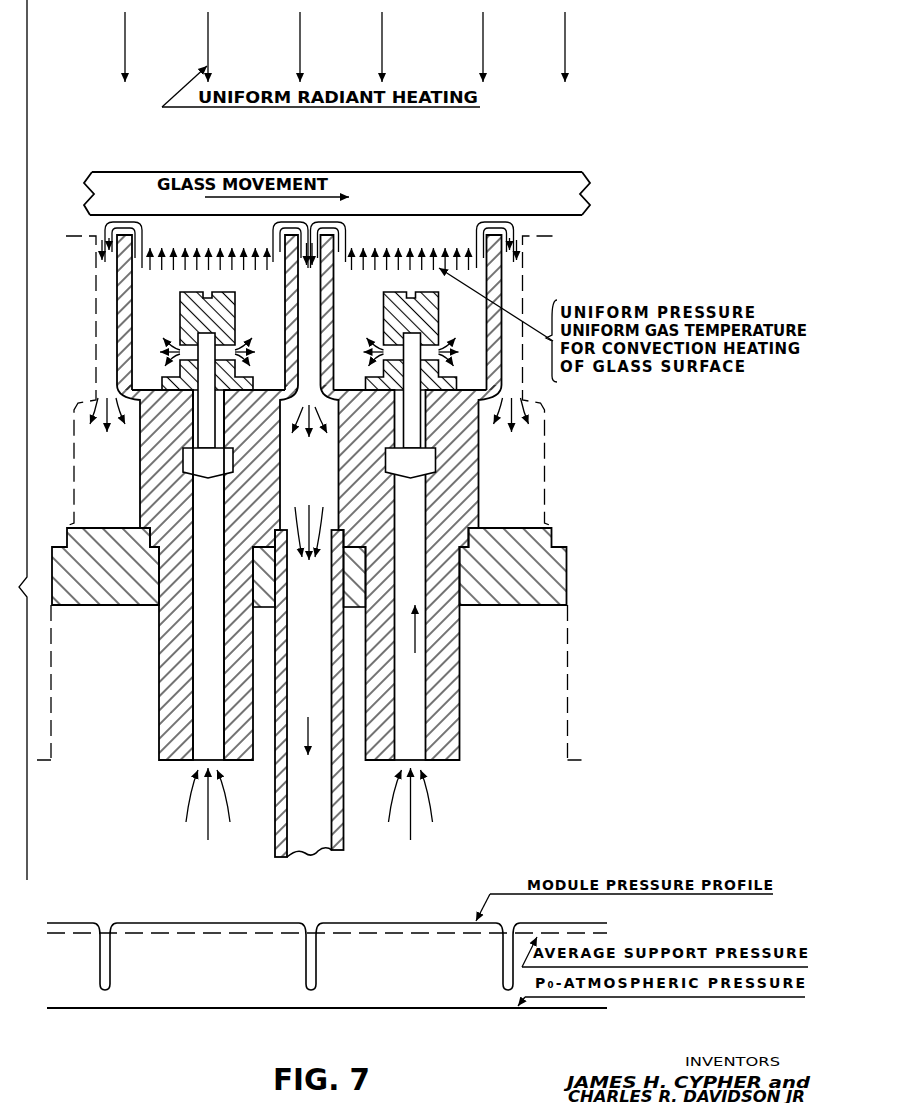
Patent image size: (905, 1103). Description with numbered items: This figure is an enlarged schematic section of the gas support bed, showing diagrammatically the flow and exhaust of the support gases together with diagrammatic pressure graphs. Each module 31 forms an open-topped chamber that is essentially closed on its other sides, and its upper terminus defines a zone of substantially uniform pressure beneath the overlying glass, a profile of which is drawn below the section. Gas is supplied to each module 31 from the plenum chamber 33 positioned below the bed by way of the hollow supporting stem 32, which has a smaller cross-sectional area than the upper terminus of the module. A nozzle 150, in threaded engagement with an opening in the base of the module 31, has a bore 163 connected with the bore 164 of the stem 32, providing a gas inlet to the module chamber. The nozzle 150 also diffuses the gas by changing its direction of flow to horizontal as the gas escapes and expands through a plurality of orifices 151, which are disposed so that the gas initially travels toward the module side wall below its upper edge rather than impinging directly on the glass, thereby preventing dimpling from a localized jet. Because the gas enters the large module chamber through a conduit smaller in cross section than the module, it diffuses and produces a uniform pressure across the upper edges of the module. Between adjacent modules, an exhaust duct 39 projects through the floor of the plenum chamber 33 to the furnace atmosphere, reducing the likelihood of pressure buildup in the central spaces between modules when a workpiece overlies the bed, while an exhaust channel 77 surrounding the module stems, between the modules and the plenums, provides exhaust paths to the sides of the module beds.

The module 31 is at (118, 312).
The stem 32 is at (140, 473).
The plenum chamber 33 is at (444, 531).
The exhaust duct 39 is at (277, 833).
The exhaust channel 77 is at (311, 482).
The nozzle 150 is at (237, 312).
The orifices 151 is at (180, 343).
The bore 163 is at (208, 378).
The bore 164 is at (197, 630).